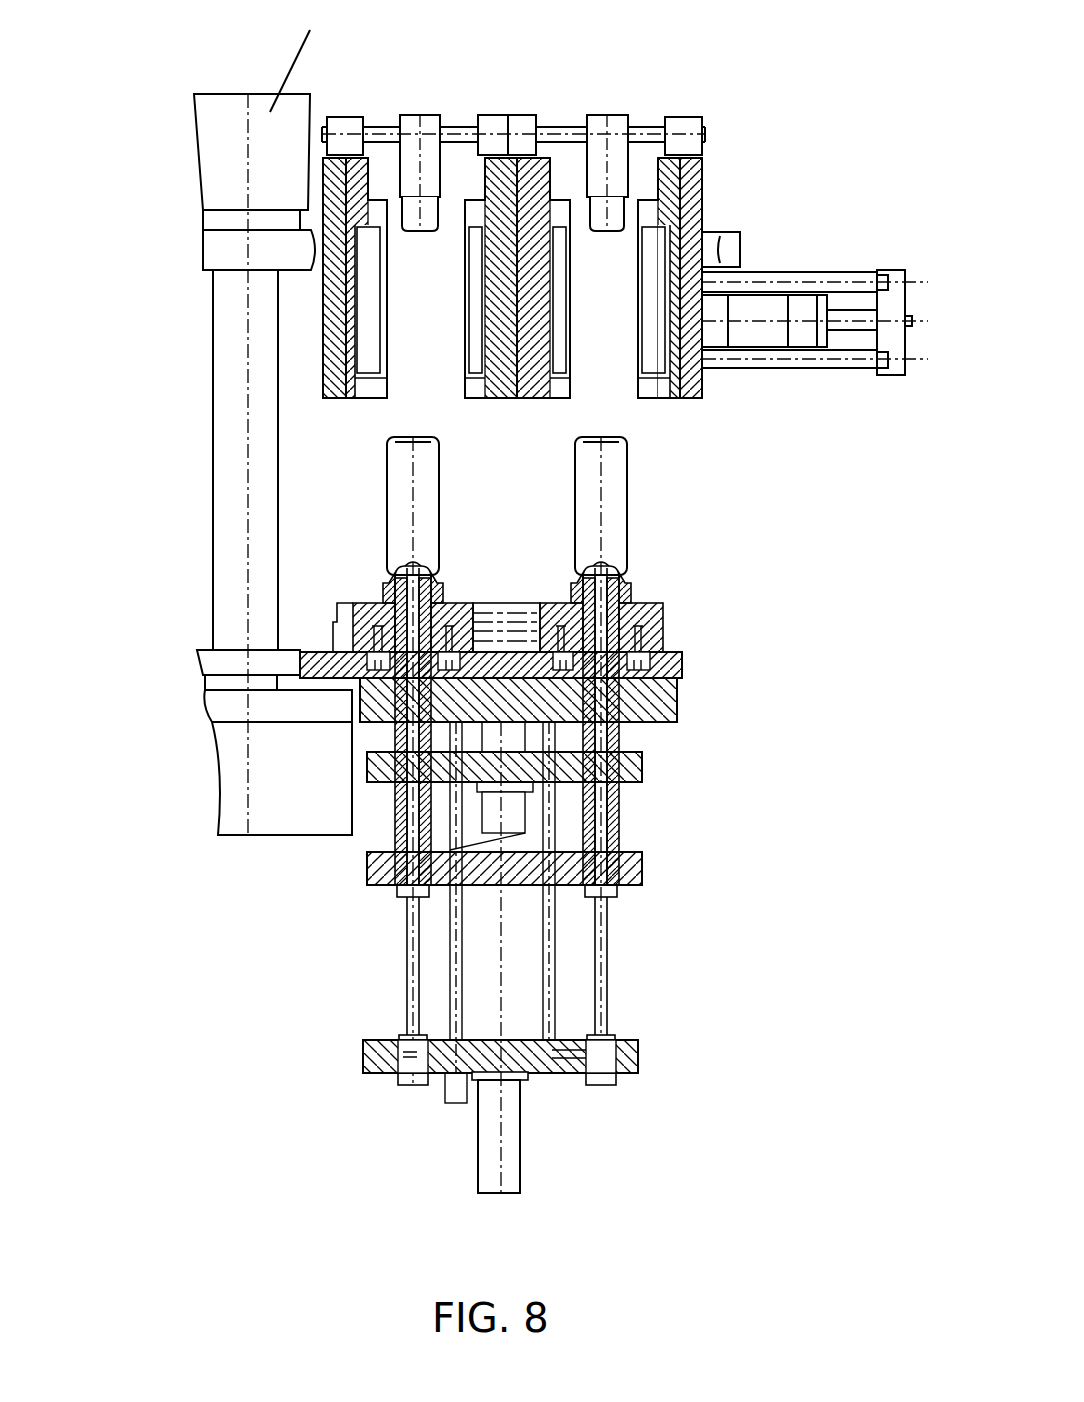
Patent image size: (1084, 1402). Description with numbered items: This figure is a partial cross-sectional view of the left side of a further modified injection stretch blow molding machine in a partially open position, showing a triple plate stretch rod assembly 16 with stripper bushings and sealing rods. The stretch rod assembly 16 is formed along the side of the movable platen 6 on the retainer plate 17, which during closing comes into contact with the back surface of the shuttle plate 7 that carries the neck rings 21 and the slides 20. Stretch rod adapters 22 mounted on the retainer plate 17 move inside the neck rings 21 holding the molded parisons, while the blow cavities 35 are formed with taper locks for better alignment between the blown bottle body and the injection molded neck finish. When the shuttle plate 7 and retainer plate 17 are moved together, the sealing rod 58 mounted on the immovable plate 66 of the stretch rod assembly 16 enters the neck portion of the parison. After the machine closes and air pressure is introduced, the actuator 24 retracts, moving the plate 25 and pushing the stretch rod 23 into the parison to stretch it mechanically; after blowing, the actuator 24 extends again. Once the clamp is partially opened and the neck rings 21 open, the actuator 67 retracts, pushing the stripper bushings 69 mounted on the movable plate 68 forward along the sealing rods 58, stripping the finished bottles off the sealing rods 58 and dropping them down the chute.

The movable platen 6 is at (228, 738).
The shuttle plate 7 is at (683, 667).
The stretch rod assembly 16 is at (638, 1063).
The retainer plate 17 is at (677, 697).
The slides 20 is at (663, 612).
The neck rings 21 is at (628, 587).
The stretch rod adapters 22 is at (640, 638).
The stretch rods 23 is at (605, 958).
The actuator 24 is at (490, 1187).
The plate 25 is at (363, 1052).
The blow cavities 35 is at (702, 200).
The sealing rod 58 is at (615, 812).
The immovable plate 66 is at (642, 872).
The actuator 67 is at (397, 872).
The movable plate 68 is at (368, 772).
The stripper bushings 69 is at (618, 735).